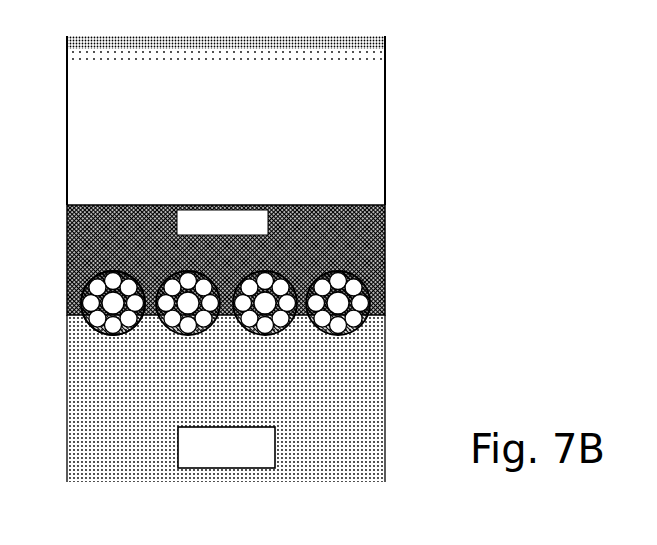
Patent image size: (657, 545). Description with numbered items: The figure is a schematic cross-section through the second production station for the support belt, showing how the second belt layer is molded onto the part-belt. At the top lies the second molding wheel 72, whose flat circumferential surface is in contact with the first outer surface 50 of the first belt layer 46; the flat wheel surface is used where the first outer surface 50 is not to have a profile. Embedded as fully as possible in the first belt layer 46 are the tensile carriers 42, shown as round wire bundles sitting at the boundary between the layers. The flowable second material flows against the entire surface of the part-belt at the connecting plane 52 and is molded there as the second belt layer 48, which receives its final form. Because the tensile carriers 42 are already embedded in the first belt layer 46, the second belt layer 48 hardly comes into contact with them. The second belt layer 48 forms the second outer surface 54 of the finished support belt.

The second molding wheel 72 is at (340, 125).
The first outer surface 50 is at (368, 200).
The first belt layer 46 is at (222, 223).
The tensile carriers 42 is at (343, 302).
The connecting plane 52 is at (82, 318).
The second belt layer 48 is at (226, 447).
The second outer surface 54 is at (90, 483).